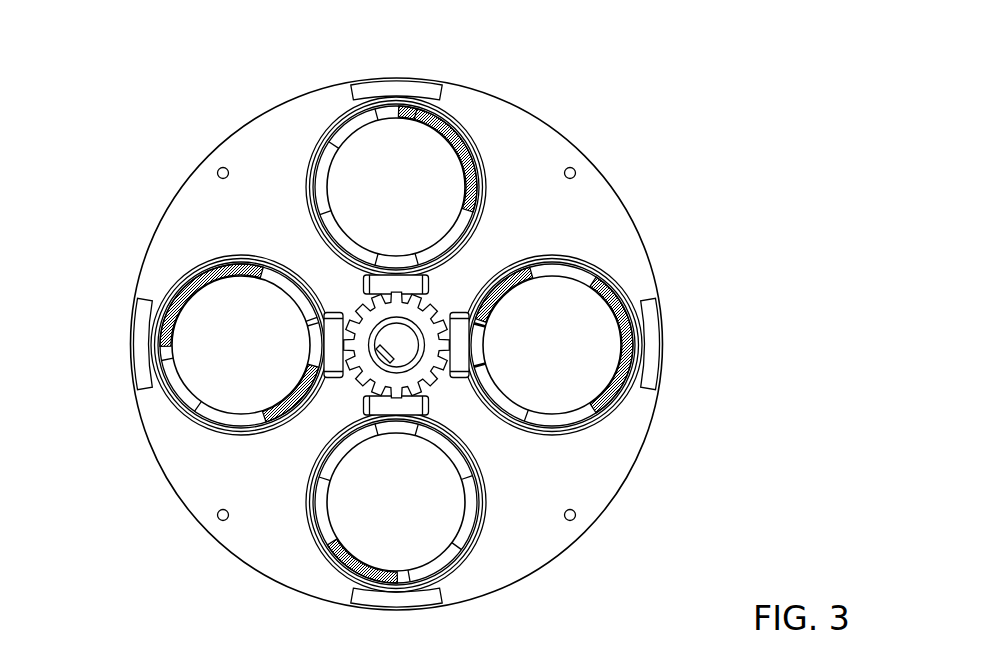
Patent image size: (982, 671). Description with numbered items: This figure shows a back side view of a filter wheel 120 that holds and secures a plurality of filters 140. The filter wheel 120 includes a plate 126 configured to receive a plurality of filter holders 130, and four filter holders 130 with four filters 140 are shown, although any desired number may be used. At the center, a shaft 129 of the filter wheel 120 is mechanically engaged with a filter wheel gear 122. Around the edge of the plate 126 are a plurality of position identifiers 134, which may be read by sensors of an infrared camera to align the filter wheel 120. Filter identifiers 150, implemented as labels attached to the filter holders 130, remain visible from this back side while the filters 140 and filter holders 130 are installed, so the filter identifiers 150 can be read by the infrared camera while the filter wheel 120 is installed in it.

The filter wheel 120 is at (126, 152).
The filter wheel gear 122 is at (423, 317).
The plate 126 is at (530, 128).
The shaft 129 is at (417, 360).
The filter holder 130 is at (338, 112).
The position identifier 134 is at (418, 88).
The filter 140 is at (414, 209).
The filter identifier 150 is at (378, 124).